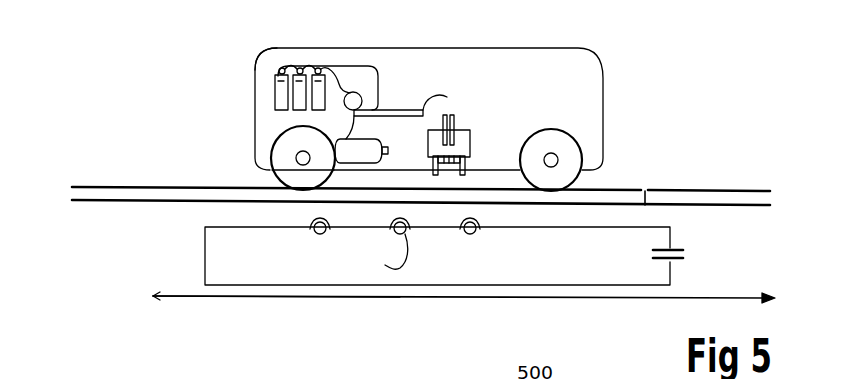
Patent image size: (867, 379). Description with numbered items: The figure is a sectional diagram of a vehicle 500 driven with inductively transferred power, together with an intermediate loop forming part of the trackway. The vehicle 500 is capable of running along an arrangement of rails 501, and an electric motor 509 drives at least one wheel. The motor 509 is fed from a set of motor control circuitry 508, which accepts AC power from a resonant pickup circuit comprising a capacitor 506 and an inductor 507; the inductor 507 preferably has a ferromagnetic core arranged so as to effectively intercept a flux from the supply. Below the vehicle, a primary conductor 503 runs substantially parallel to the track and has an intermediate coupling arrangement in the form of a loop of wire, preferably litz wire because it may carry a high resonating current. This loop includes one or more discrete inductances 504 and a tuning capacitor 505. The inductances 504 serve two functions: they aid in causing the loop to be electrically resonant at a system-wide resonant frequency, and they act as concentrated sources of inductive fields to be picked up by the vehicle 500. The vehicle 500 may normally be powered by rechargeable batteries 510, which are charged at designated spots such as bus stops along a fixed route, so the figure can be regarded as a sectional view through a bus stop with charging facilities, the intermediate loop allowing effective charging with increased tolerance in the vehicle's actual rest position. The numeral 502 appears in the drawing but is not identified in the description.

The vehicle 500 is at (657, 34).
The rails 501 is at (730, 189).
The track circuit section 502 is at (469, 265).
The primary conductor 503 is at (173, 292).
The discrete inductances 504 is at (478, 232).
The tuning capacitor 505 is at (683, 258).
The capacitor 506 is at (452, 114).
The inductor 507 is at (470, 161).
The motor control circuitry 508 is at (422, 110).
The electric motor 509 is at (338, 139).
The rechargeable batteries 510 is at (275, 80).